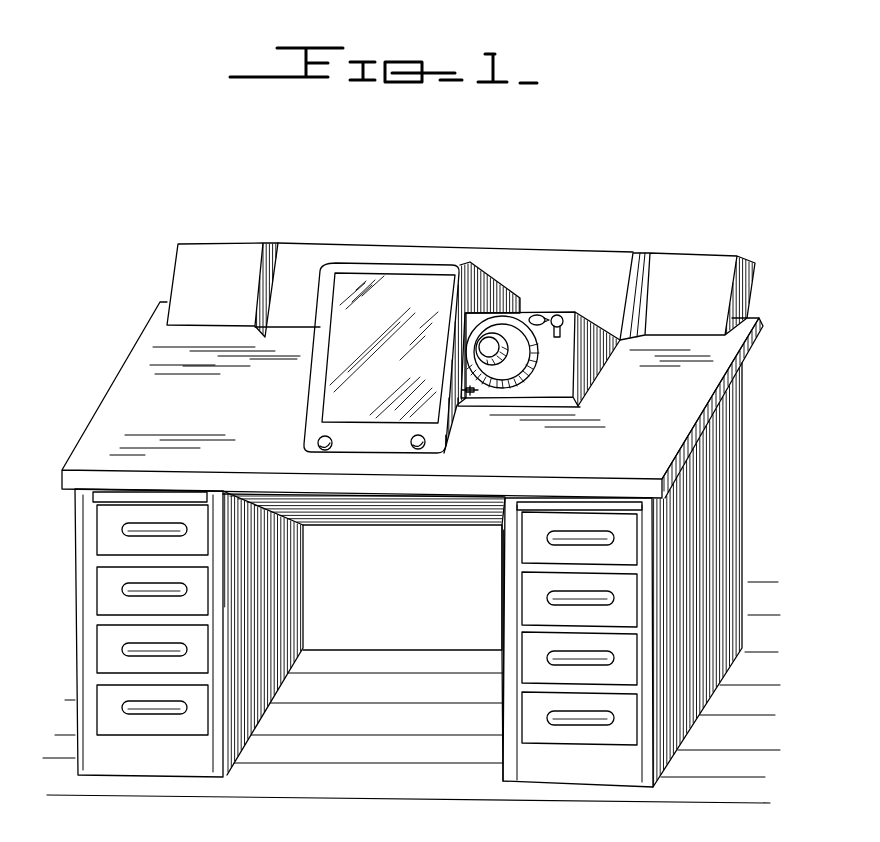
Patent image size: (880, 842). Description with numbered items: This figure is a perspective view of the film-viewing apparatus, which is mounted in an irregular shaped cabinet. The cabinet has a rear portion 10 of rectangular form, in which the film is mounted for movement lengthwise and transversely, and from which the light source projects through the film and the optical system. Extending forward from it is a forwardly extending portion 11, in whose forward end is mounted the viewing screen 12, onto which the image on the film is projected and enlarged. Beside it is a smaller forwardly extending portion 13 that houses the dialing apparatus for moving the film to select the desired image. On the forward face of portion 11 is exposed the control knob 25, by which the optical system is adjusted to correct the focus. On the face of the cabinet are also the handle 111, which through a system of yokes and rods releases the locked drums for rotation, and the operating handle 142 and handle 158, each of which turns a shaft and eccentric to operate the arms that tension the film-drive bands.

The rear portion 10 is at (315, 252).
The forwardly extending portion 11 is at (316, 392).
The viewing screen 12 is at (388, 348).
The smaller forwardly extending portion 13 is at (583, 380).
The knob 25 is at (416, 449).
The operating handle 142 is at (538, 314).
The handle 158 is at (563, 318).
The handle 111 is at (470, 395).